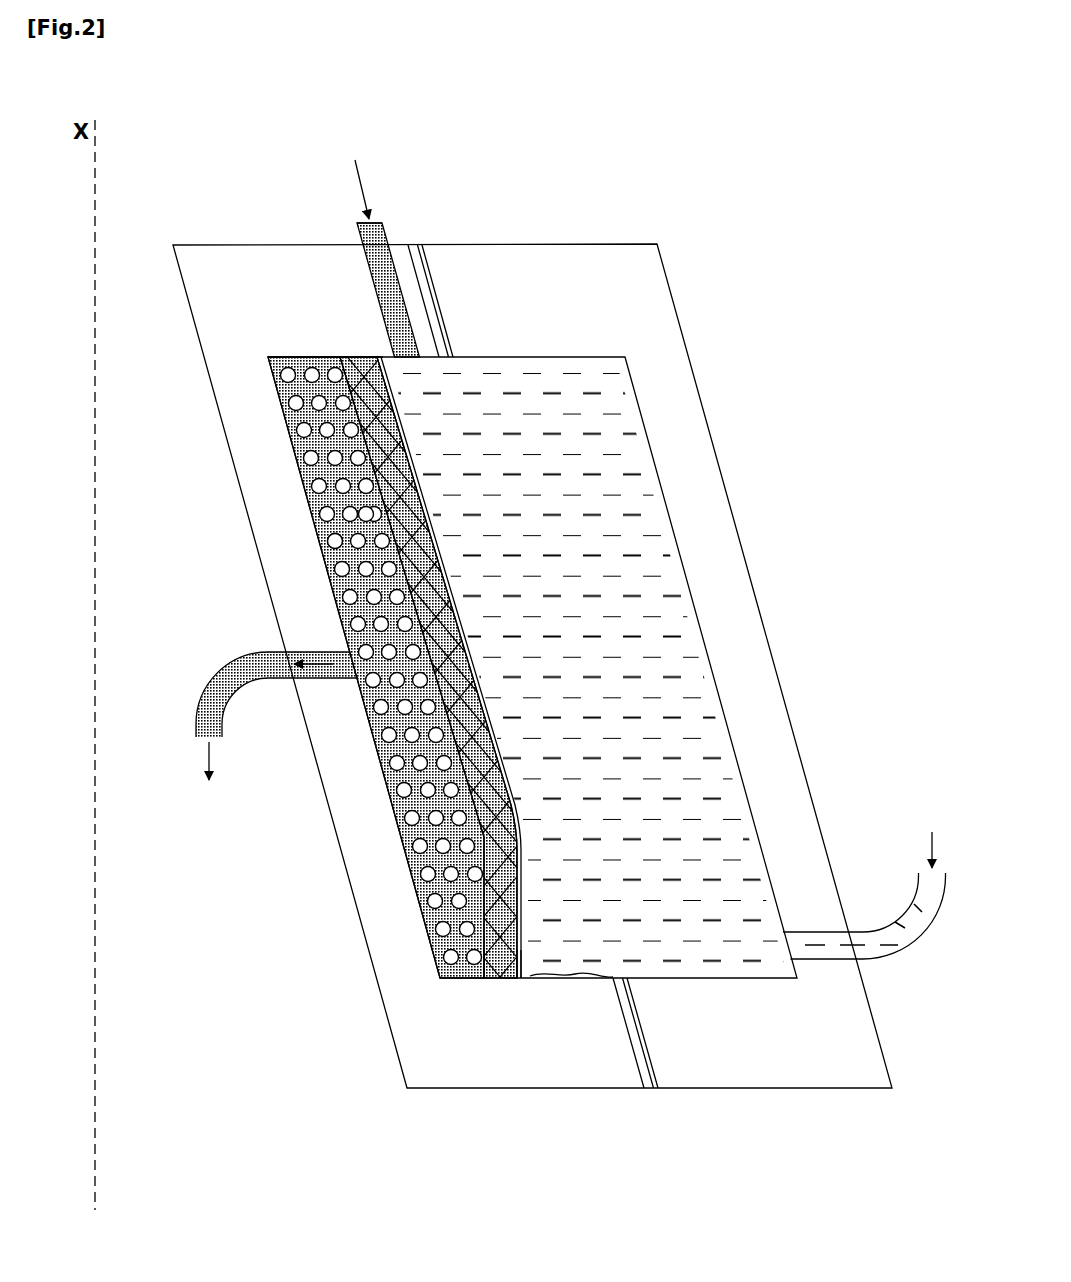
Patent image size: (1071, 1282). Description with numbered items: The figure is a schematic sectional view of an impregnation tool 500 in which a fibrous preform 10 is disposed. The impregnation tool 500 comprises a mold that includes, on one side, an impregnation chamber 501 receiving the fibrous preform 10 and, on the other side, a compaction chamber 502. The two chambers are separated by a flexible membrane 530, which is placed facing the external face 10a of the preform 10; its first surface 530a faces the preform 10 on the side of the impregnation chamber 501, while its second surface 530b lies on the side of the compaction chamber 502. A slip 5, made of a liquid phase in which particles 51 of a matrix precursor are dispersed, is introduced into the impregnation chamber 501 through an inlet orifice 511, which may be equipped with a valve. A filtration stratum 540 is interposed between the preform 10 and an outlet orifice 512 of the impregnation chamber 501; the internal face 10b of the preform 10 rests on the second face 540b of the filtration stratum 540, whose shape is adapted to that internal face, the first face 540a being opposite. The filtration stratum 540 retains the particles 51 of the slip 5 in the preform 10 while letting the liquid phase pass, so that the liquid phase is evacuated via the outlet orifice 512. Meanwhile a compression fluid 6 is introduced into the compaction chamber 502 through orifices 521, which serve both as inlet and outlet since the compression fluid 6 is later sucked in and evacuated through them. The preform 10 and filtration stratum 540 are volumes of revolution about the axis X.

The impregnation tool 500 is at (731, 282).
The impregnation chamber 501 is at (373, 357).
The compaction chamber 502 is at (628, 487).
The slip 5 is at (390, 237).
The particles 51 is at (362, 258).
The inlet orifice 511 is at (381, 218).
The outlet orifice 512 is at (227, 680).
The inlet and outlet orifices 521 is at (898, 930).
The flexible membrane 530 is at (395, 412).
The first surface 530a is at (455, 958).
The second surface 530b is at (574, 977).
The filtration stratum 540 is at (320, 418).
The first face 540a is at (358, 512).
The second face 540b is at (296, 395).
The fibrous preform 10 is at (482, 752).
The external face 10a is at (520, 979).
The internal face 10b is at (481, 980).
The compression fluid 6 is at (668, 630).